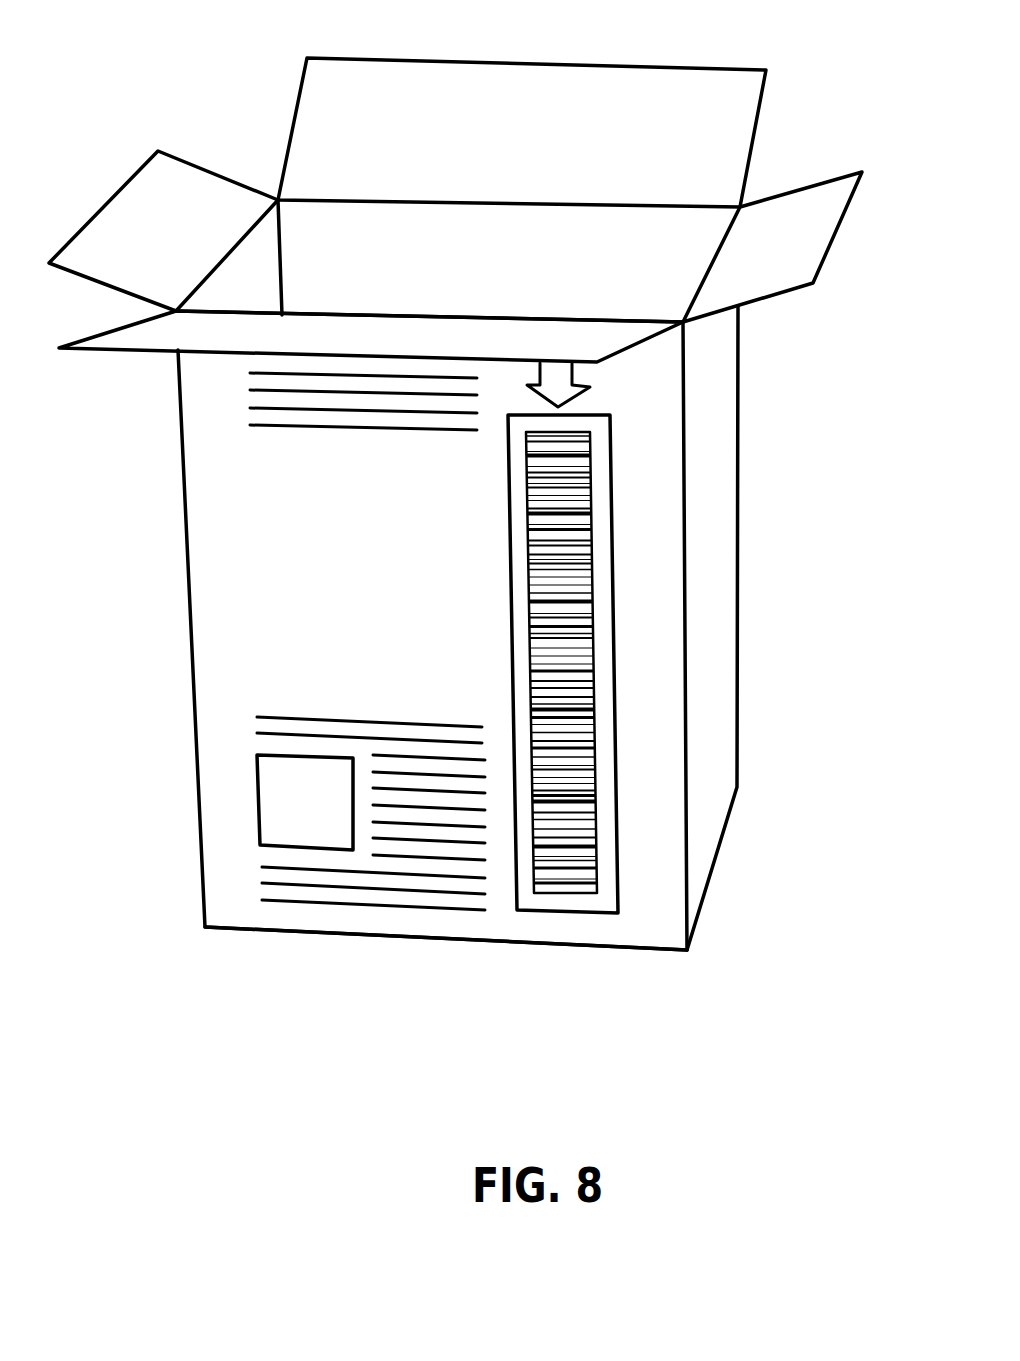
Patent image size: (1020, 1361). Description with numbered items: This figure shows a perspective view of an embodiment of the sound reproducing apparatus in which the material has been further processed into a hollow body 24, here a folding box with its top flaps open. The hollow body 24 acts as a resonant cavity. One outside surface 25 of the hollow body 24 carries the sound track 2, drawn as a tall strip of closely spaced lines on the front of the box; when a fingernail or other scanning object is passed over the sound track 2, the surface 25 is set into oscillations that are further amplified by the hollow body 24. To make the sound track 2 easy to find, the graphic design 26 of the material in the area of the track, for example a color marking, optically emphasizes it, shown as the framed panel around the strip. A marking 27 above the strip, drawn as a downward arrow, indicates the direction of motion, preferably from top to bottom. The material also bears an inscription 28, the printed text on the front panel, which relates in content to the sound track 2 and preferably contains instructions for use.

The sound track 2 is at (578, 744).
The hollow body 24 is at (757, 552).
The outside surface 25 is at (657, 917).
The graphic design 26 is at (535, 888).
The marking 27 is at (562, 372).
The inscription 28 is at (245, 492).